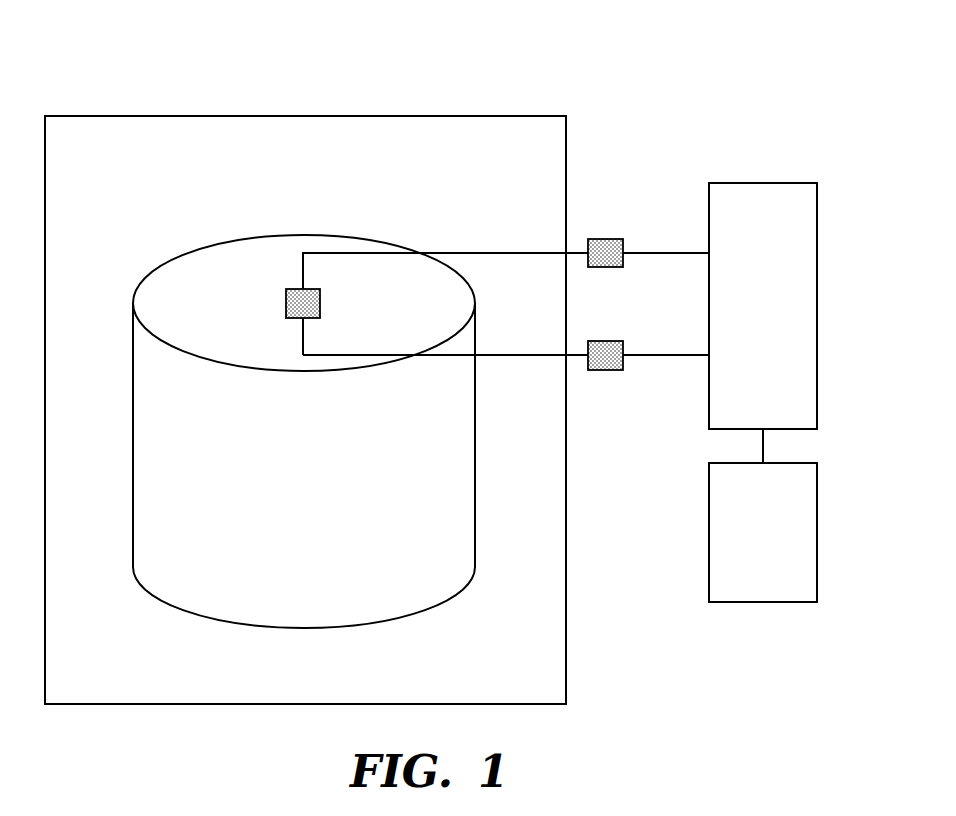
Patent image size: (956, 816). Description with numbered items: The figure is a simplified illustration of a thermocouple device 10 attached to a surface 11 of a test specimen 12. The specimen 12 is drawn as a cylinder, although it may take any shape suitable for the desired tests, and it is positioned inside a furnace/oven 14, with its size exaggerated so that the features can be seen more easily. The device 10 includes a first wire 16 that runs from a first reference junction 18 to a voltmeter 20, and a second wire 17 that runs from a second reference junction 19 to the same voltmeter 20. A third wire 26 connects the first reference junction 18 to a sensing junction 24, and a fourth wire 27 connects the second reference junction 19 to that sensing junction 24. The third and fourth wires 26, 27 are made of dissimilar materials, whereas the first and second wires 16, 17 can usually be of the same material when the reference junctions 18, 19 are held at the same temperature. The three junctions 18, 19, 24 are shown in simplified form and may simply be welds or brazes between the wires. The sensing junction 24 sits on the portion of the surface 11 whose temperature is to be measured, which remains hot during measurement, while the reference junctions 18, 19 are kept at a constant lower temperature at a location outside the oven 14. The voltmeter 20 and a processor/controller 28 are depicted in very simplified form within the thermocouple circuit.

The thermocouple device 10 is at (731, 68).
The surface 11 is at (220, 288).
The test specimen 12 is at (463, 544).
The furnace/oven 14 is at (566, 688).
The first wire 16 is at (665, 252).
The second wire 17 is at (663, 357).
The first reference junction 18 is at (605, 252).
The second reference junction 19 is at (605, 357).
The voltmeter 20 is at (758, 190).
The sensing junction 24 is at (288, 311).
The third wire 26 is at (504, 252).
The fourth wire 27 is at (504, 357).
The processor/controller 28 is at (759, 593).